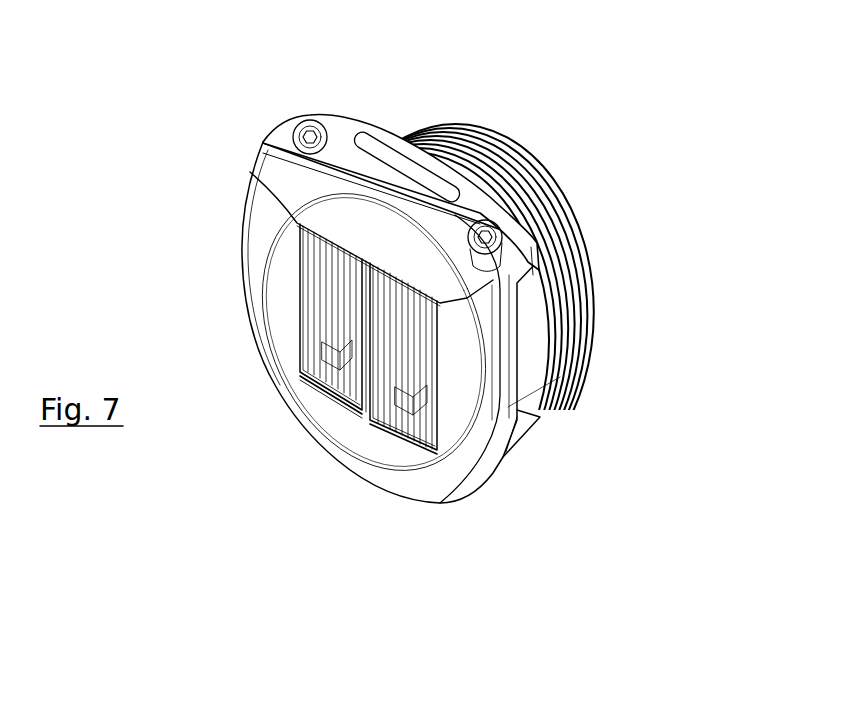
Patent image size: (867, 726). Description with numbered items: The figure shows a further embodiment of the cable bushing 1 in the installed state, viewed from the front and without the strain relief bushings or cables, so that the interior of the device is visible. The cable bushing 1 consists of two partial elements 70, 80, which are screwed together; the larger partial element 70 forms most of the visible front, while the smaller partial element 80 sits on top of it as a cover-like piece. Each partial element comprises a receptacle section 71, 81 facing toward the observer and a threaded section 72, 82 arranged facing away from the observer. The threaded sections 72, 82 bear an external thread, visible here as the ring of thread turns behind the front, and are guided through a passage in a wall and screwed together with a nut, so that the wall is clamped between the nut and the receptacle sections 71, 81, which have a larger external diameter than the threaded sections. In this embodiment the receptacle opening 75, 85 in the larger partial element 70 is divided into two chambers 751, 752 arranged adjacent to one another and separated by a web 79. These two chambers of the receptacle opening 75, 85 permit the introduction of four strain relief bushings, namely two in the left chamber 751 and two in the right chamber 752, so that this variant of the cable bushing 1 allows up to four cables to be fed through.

The cable bushing 1 is at (439, 343).
The partial element 70 is at (250, 210).
The receptacle section 71 is at (527, 382).
The threaded section 72 is at (585, 355).
The receptacle opening 75 is at (355, 412).
The web 79 is at (365, 372).
The partial element 80 is at (350, 133).
The receptacle section 81 is at (523, 285).
The threaded section 82 is at (557, 232).
The receptacle opening 85 is at (357, 258).
The left chamber 751 is at (320, 343).
The right chamber 752 is at (410, 390).